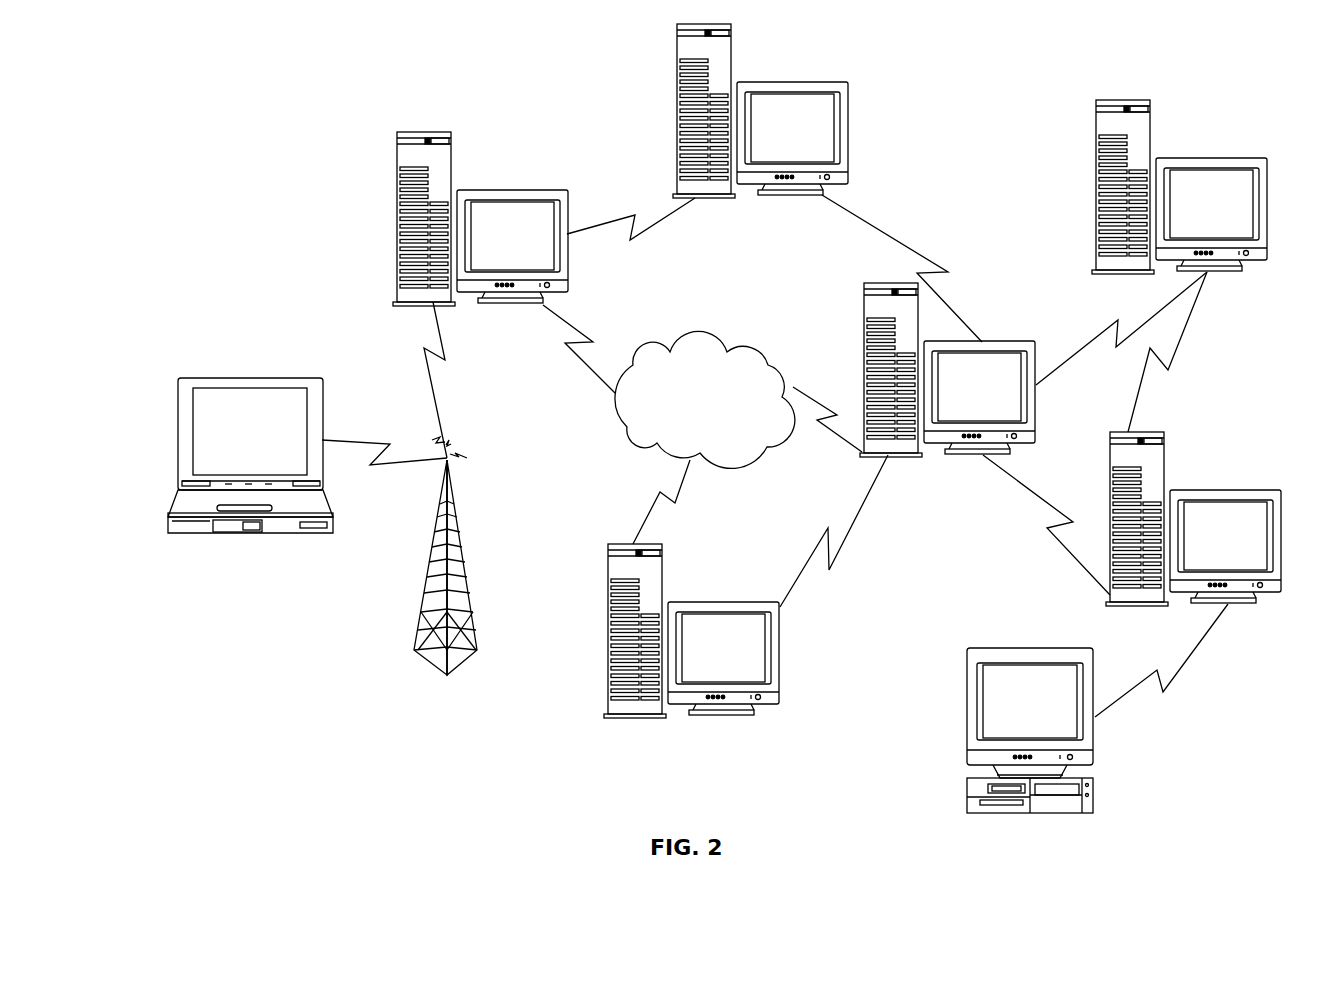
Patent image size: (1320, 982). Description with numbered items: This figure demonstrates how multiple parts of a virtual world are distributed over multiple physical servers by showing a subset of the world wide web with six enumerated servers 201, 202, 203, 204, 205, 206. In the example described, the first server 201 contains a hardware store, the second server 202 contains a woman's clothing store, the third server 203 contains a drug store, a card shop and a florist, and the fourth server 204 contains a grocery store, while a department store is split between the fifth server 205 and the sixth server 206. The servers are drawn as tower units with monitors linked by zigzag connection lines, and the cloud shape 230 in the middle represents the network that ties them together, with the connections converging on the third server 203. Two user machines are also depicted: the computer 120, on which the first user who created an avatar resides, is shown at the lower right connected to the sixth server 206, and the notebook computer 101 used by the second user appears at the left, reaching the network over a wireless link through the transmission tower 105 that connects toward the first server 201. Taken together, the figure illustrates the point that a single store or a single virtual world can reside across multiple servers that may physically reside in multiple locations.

The notebook computer 101 is at (250, 481).
The wireless transmission tower 105 is at (445, 577).
The computer 120 is at (1030, 749).
The server 1 201 is at (480, 234).
The server 2 202 is at (760, 128).
The server 3 203 is at (947, 389).
The server 4 204 is at (1179, 201).
The server 5 205 is at (1193, 536).
The server 6 206 is at (691, 650).
The network 230 is at (705, 399).